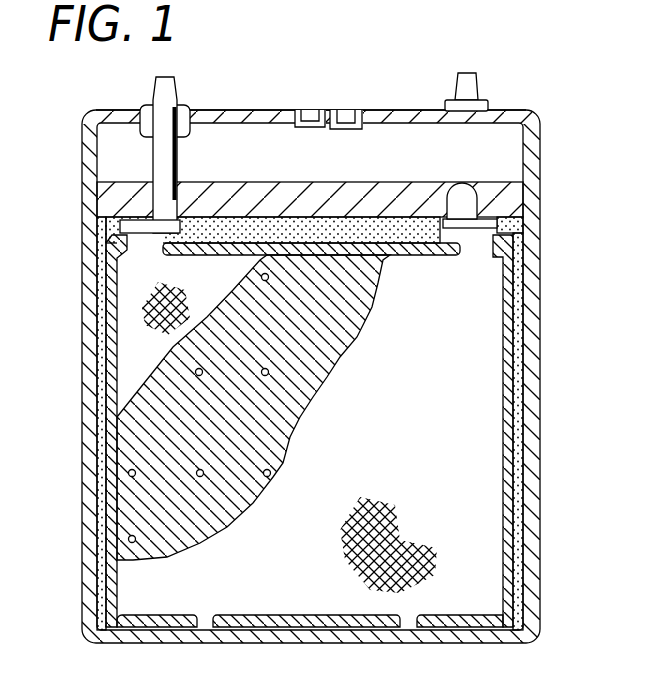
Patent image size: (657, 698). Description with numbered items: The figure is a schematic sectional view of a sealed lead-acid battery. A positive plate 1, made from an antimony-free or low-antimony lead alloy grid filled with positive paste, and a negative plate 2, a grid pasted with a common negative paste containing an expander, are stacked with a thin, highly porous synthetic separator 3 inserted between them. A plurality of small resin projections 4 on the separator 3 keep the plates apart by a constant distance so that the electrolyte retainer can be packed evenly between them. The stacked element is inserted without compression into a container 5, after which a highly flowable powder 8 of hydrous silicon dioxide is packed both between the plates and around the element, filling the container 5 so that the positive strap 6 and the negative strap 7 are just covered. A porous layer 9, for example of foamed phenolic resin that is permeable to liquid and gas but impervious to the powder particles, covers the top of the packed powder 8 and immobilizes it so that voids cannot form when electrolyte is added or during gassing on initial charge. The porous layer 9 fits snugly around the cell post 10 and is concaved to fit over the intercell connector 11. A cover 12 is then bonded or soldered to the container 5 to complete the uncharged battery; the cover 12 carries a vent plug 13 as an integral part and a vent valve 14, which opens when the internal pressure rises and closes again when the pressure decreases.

The positive plate 1 is at (137, 348).
The negative plate 2 is at (514, 453).
The synthetic separator 3 is at (125, 520).
The projections 4 is at (128, 472).
The container 5 is at (536, 367).
The positive strap 6 is at (120, 231).
The negative strap 7 is at (500, 229).
The powder 8 is at (417, 252).
The porous layer 9 is at (487, 215).
The cell post 10 is at (154, 162).
The intercell connector 11 is at (476, 202).
The cover 12 is at (400, 109).
The vent plug 13 is at (320, 109).
The vent valve 14 is at (339, 109).